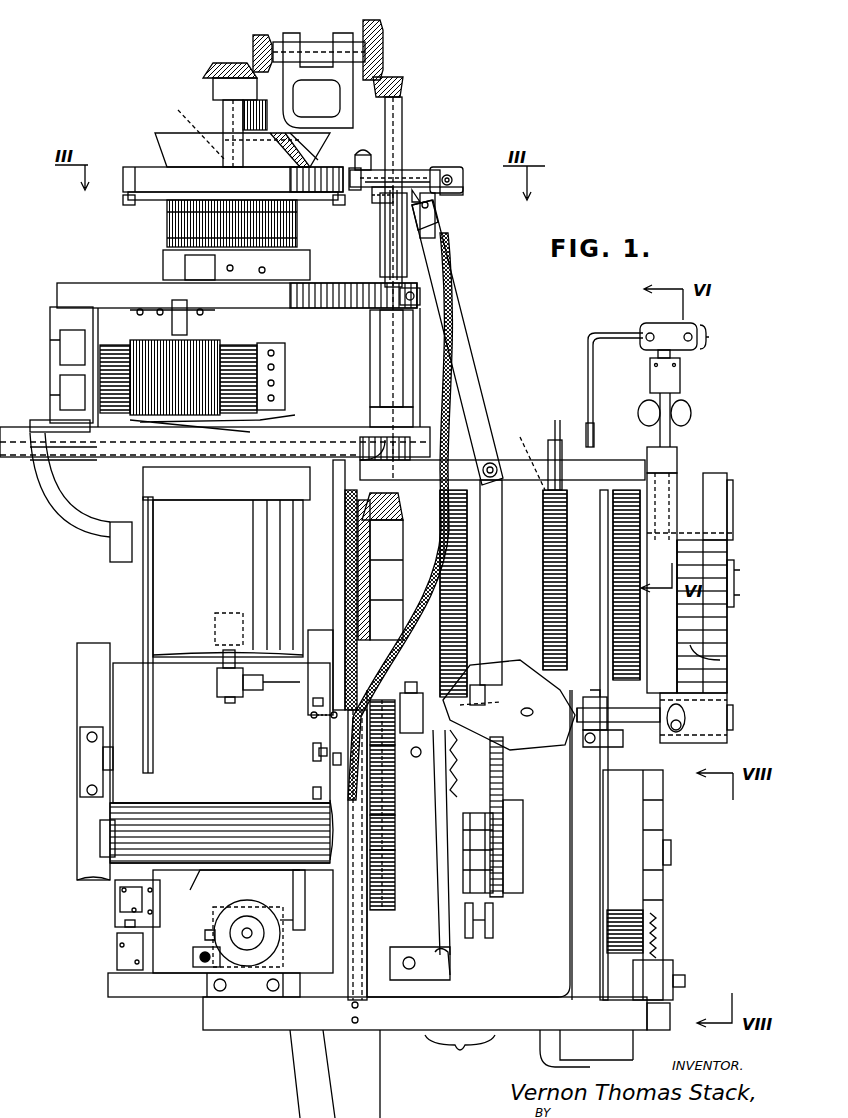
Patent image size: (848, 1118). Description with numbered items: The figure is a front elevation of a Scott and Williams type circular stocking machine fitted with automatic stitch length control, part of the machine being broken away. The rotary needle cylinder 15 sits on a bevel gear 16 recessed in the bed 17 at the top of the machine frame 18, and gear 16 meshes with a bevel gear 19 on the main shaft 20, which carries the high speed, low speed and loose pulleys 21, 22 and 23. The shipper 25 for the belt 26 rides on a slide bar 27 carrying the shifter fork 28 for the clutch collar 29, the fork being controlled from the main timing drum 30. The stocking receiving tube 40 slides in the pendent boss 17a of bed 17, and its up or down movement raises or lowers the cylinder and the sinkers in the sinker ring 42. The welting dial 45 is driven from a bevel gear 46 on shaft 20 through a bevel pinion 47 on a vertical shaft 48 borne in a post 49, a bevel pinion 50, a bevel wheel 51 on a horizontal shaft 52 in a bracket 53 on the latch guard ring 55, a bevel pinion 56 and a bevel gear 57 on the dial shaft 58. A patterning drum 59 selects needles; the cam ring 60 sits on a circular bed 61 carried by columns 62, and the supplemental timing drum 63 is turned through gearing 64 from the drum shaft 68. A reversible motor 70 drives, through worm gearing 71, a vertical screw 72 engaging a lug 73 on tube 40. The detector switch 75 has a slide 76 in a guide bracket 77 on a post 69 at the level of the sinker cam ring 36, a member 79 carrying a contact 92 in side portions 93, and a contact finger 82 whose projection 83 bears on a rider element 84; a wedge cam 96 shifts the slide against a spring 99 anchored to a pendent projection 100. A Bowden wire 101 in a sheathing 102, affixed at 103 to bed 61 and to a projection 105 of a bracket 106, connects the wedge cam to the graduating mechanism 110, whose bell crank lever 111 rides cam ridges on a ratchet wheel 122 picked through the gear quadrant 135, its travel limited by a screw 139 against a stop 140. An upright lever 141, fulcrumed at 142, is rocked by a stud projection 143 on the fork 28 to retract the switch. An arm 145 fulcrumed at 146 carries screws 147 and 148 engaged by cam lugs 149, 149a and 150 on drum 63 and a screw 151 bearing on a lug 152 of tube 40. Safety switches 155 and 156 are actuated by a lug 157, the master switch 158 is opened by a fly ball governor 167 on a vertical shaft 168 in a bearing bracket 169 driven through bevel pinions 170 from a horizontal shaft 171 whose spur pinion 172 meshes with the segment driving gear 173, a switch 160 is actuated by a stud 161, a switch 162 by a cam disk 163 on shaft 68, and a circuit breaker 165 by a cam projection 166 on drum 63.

The rotary needle cylinder 15 is at (167, 236).
The bevel gear 16 is at (320, 430).
The bed 17 is at (70, 448).
The pendent boss 17a is at (192, 500).
The machine frame 18 is at (461, 1074).
The bevel gear 19 is at (333, 498).
The main shaft 20 is at (738, 580).
The high speed pulley 21 is at (657, 670).
The low speed pulley 22 is at (727, 662).
The loose pulley 23 is at (730, 490).
The shipper 25 is at (717, 742).
The belt 26 is at (715, 480).
The slide bar 27 is at (623, 738).
The shifter fork 28 is at (550, 490).
The clutch collar 29 is at (543, 522).
The main timing drum 30 is at (510, 880).
The sinker cam ring 36 is at (140, 170).
The stocking receiving tube 40 is at (165, 620).
The sinker ring 42 is at (138, 198).
The welting dial 45 is at (183, 118).
The bevel gear 46 is at (345, 575).
The bevel pinion 47 is at (403, 535).
The vertical shaft 48 is at (395, 468).
The upstanding post 49 is at (380, 362).
The bevel pinion 50 is at (403, 88).
The bevel wheel 51 is at (383, 36).
The horizontal shaft 52 is at (312, 44).
The bracket 53 is at (340, 97).
The needle latch guard ring 55 is at (175, 135).
The bevel pinion 56 is at (256, 36).
The bevel gear 57 is at (210, 70).
The dial shaft 58 is at (243, 118).
The patterning drum 59 is at (172, 330).
The cam ring 60 is at (185, 266).
The circular bed 61 is at (332, 308).
The columns 62 is at (55, 325).
The supplemental timing drum 63 is at (90, 672).
The gearing 64 is at (382, 912).
The drum shaft 68 is at (452, 960).
The post 69 is at (385, 262).
The reversible electric motor 70 is at (235, 910).
The worm gearing 71 is at (205, 933).
The vertical axis screw 72 is at (262, 997).
The lateral lug projection 73 is at (205, 968).
The reversing detector switch 75 is at (430, 168).
The slide 76 is at (372, 197).
The guide bracket 77 is at (390, 230).
The member 79 is at (463, 190).
The contact finger 82 is at (412, 172).
The rearward projection 83 is at (362, 152).
The rider element 84 is at (349, 170).
The contact 92 is at (463, 177).
The upstanding side portions 93 is at (452, 178).
The wedge cam 96 is at (422, 198).
The spring 99 is at (430, 205).
The pendent projection 100 is at (435, 222).
The Bowden wire 101 is at (433, 240).
The guide sheathing 102 is at (445, 320).
The sheathing anchorage 103 is at (420, 295).
The bracket projection 105 is at (320, 670).
The bracket 106 is at (360, 1008).
The graduating mechanism 110 is at (221, 831).
The bell crank lever 111 is at (395, 836).
The ratchet wheel 122 is at (395, 775).
The gear quadrant 135 is at (440, 638).
The adjustable screw 139 is at (392, 810).
The stop 140 is at (395, 795).
The upright lever 141 is at (475, 372).
The fulcrum 142 is at (495, 462).
The stud projection 143 is at (492, 688).
The arm 145 is at (313, 703).
The fulcrum 146 is at (300, 675).
The adjustable screw 147 is at (311, 716).
The adjustable screw 148 is at (316, 743).
The cam lug 149 is at (313, 792).
The cam lug 149a is at (319, 752).
The cam lug 150 is at (336, 765).
The adjustable screw 151 is at (217, 676).
The lateral lug projection 152 is at (220, 613).
The safety switch 155 is at (120, 900).
The safety switch 156 is at (117, 955).
The lug projection 157 is at (125, 924).
The master switch 158 is at (711, 337).
The switch 160 is at (305, 918).
The stud 161 is at (233, 907).
The switch 162 is at (665, 970).
The supplemental cam disk 163 is at (663, 815).
The circuit breaker switch 165 is at (588, 345).
The lateral cam projection 166 is at (100, 835).
The fly ball governor 167 is at (680, 395).
The vertical shaft 168 is at (648, 433).
The bearing bracket 169 is at (677, 455).
The bevel gear pinions 170 is at (733, 533).
The horizontal shaft 171 is at (613, 570).
The spur pinion 172 is at (526, 452).
The segment driving gear 173 is at (556, 425).